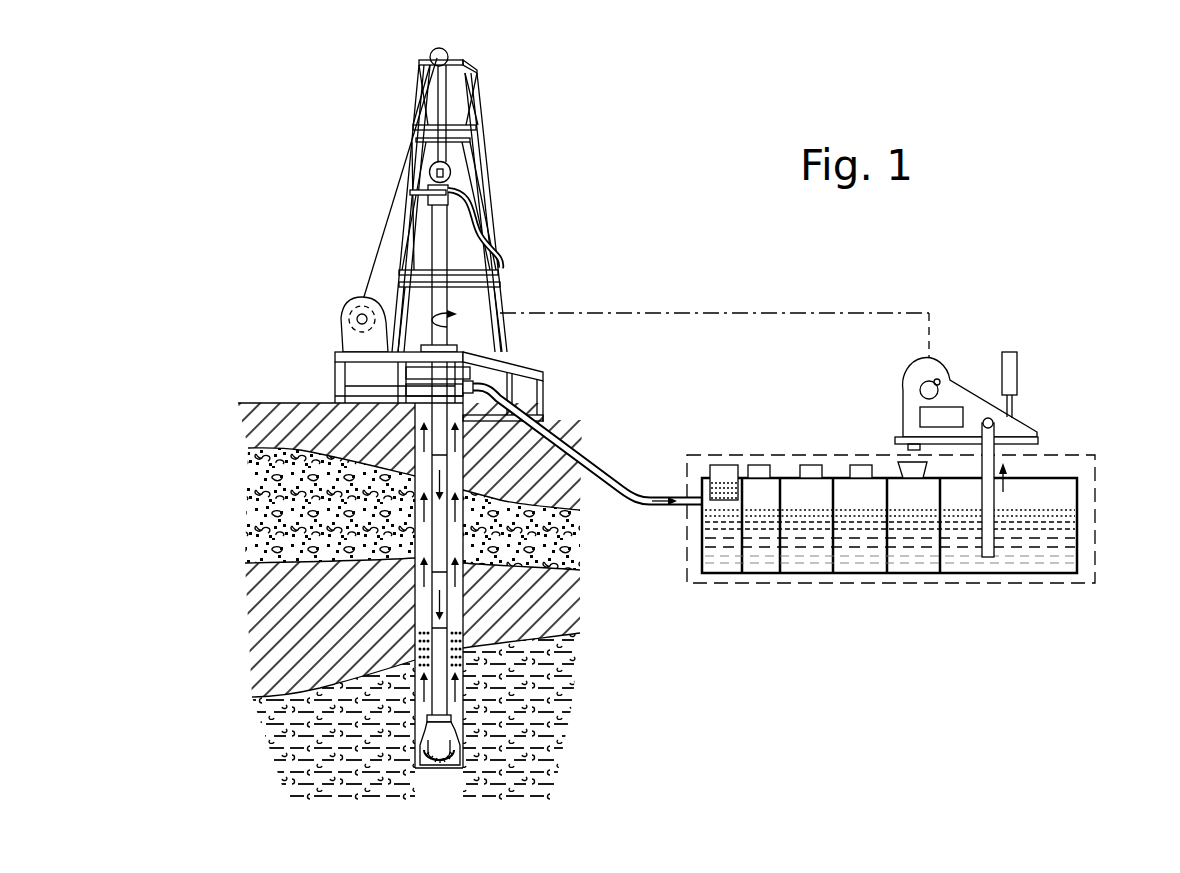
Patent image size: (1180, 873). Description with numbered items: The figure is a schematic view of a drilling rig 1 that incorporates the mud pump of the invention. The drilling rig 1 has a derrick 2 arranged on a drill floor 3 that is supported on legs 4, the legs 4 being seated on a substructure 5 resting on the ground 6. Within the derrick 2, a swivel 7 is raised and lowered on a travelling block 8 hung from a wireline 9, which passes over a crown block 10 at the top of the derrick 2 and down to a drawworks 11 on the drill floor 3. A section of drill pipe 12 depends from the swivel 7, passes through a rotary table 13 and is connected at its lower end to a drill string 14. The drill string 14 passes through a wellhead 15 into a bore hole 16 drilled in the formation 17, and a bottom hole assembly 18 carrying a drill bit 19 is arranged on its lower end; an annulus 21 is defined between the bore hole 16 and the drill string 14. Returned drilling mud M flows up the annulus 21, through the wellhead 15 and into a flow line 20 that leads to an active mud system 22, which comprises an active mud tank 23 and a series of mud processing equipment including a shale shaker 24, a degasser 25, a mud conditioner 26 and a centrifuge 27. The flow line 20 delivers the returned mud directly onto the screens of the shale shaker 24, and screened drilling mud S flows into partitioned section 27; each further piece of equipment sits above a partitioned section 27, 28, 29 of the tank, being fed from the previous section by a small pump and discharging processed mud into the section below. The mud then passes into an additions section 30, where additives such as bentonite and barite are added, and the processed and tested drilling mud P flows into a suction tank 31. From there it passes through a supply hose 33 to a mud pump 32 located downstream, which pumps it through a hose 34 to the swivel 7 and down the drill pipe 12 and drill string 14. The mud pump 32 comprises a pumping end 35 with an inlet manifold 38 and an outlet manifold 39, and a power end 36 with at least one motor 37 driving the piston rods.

The drilling rig 1 is at (478, 60).
The derrick 2 is at (487, 123).
The drill floor 3 is at (335, 355).
The legs 4 is at (543, 383).
The substructure 5 is at (515, 412).
The ground 6 is at (260, 403).
The swivel 7 is at (452, 190).
The travelling block 8 is at (449, 164).
The wireline 9 is at (447, 110).
The crown block 10 is at (433, 51).
The drawworks 11 is at (345, 316).
The drill pipe 12 is at (437, 253).
The rotary table 13 is at (490, 357).
The drill string 14 is at (440, 412).
The wellhead 15 is at (420, 386).
The bore hole 16 is at (425, 613).
The formation 17 is at (275, 670).
The bottom hole assembly 18 is at (440, 645).
The drill bit 19 is at (455, 752).
The flow line 20 is at (588, 472).
The annulus 21 is at (420, 500).
The active mud system 22 is at (873, 597).
The active mud tank 23 is at (758, 597).
The shale shaker 24 is at (710, 500).
The degasser 25 is at (762, 465).
The mud conditioner 26 is at (806, 465).
The centrifuge / partitioned section 27 is at (857, 465).
The partitioned section 28 is at (823, 573).
The partitioned section 29 is at (845, 541).
The additions section 30 is at (888, 460).
The suction tank 31 is at (1060, 545).
The mud pump 32 is at (1050, 428).
The supply hose 33 is at (994, 490).
The hose 34 is at (509, 285).
The pumping end 35 is at (1030, 427).
The power end 36 is at (906, 365).
The motor 37 is at (946, 412).
The inlet manifold 38 is at (994, 425).
The outlet manifold 39 is at (1012, 372).
The returned drilling mud M is at (430, 517).
The screened drilling mud S is at (733, 502).
The processed and tested drilling mud P is at (1025, 573).